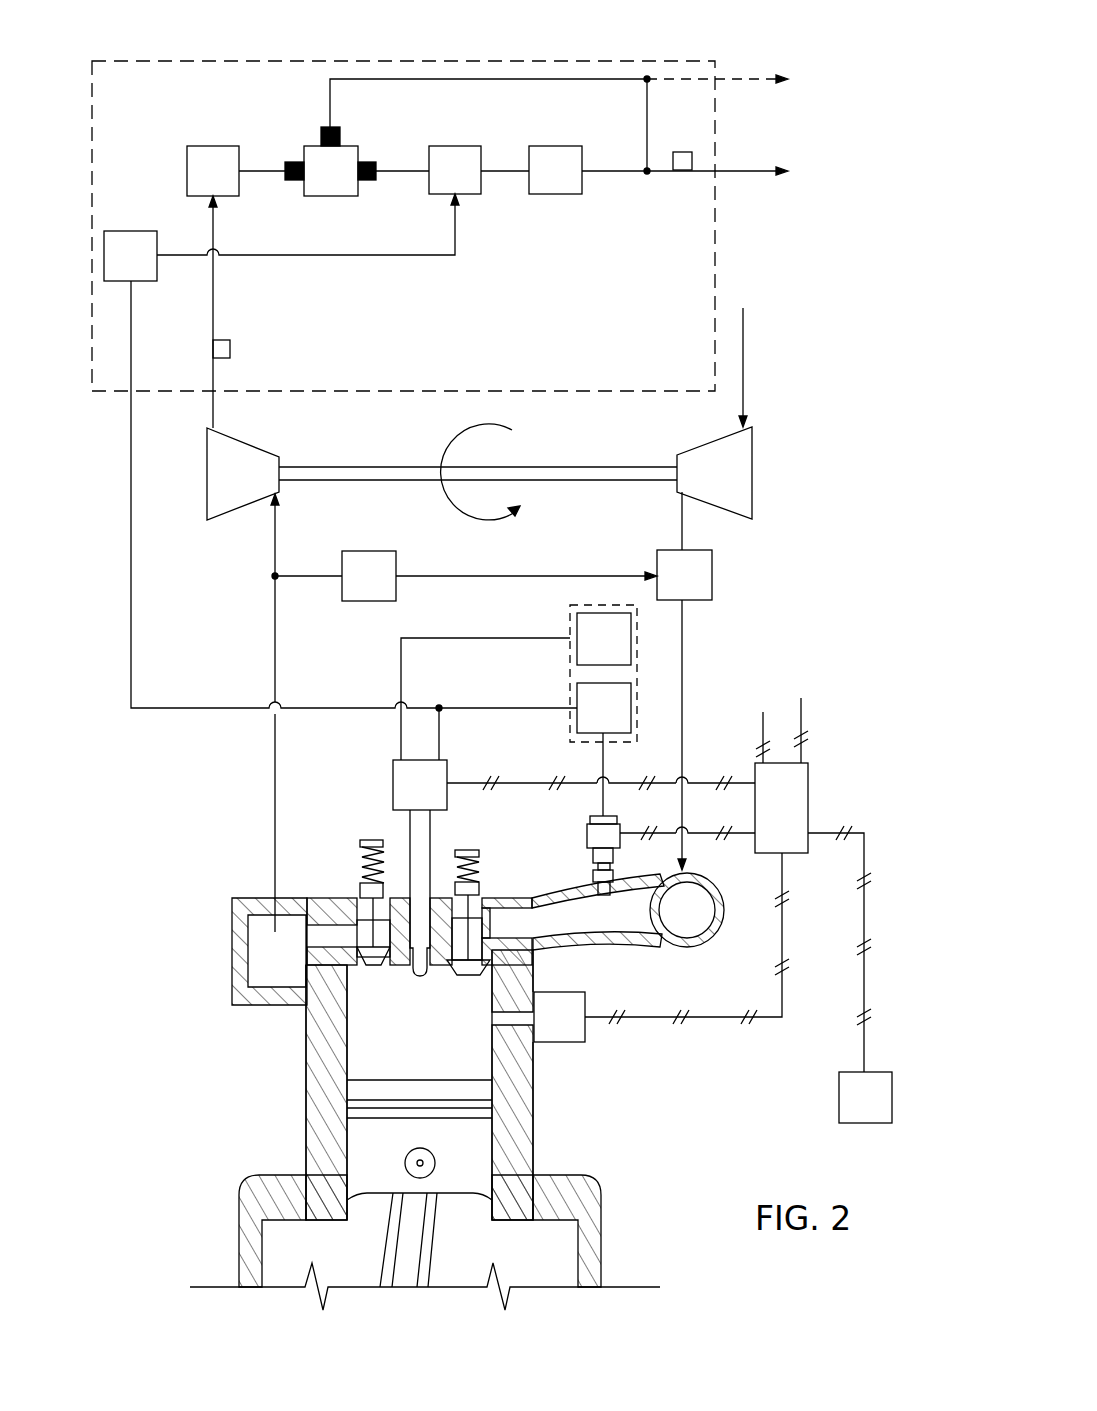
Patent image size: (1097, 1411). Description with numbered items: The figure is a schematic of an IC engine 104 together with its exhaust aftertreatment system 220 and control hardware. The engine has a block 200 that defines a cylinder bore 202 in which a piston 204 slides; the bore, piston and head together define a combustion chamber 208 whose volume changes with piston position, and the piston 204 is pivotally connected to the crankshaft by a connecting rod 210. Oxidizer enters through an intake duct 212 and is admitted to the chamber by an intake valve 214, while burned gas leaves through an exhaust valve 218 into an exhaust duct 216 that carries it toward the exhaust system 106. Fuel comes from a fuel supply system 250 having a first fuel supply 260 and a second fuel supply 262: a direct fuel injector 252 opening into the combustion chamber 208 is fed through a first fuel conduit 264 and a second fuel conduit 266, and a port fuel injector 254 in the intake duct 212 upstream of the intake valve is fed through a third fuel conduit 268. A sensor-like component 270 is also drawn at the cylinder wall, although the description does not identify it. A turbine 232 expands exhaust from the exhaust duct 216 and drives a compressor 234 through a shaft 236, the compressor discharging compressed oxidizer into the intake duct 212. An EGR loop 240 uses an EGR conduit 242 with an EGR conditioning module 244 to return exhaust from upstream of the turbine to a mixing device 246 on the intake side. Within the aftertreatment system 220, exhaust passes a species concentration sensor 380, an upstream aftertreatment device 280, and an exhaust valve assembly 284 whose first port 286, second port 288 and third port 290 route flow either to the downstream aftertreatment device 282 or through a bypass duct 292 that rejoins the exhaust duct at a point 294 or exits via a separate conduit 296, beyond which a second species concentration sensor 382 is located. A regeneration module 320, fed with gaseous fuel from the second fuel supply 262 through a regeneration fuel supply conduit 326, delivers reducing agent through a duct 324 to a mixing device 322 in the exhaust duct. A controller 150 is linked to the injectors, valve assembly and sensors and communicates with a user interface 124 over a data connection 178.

The IC engine 104 is at (826, 50).
The exhaust system 106 is at (136, 738).
The user interface 124 is at (853, 1110).
The controller 150 is at (769, 813).
The data connection 178 is at (864, 985).
The block 200 is at (306, 1127).
The cylinder bore 202 is at (348, 1058).
The piston 204 is at (451, 1154).
The combustion chamber 208 is at (408, 1023).
The connecting rod 210 is at (430, 1238).
The intake duct 212 is at (714, 940).
The intake valve 214 is at (490, 910).
The exhaust duct 216 is at (257, 160).
The exhaust valve 218 is at (360, 910).
The exhaust aftertreatment system 220 is at (715, 238).
The turbine 232 is at (226, 486).
The compressor 234 is at (705, 485).
The shaft 236 is at (598, 460).
The EGR loop 240 is at (479, 432).
The EGR conduit 242 is at (462, 580).
The EGR conditioning module 244 is at (357, 588).
The mixing device 246 is at (672, 587).
The fuel supply system 250 is at (655, 673).
The direct fuel injector 252 is at (408, 797).
The port fuel injector 254 is at (587, 832).
The first fuel supply 260 is at (592, 651).
The second fuel supply 262 is at (592, 720).
The first fuel conduit 264 is at (401, 648).
The second fuel conduit 266 is at (498, 713).
The third fuel conduit 268 is at (605, 755).
The knock sensor 270 is at (547, 1029).
The upstream aftertreatment device 280 is at (201, 183).
The downstream aftertreatment device 282 is at (543, 183).
The exhaust valve assembly 284 is at (319, 183).
The first port 286 is at (295, 185).
The second port 288 is at (366, 185).
The third port 290 is at (321, 132).
The bypass duct 292 is at (405, 70).
The point 294 is at (650, 175).
The conduit 296 is at (740, 78).
The regeneration module 320 is at (118, 268).
The mixing device 322 is at (443, 183).
The duct 324 is at (318, 258).
The regeneration fuel supply conduit 326 is at (187, 712).
The species concentration sensor 380 is at (230, 350).
The species concentration sensor 382 is at (680, 150).